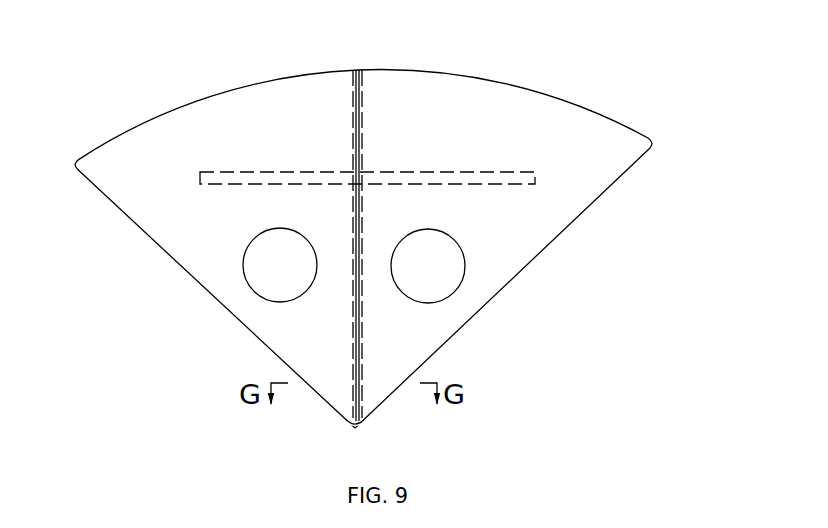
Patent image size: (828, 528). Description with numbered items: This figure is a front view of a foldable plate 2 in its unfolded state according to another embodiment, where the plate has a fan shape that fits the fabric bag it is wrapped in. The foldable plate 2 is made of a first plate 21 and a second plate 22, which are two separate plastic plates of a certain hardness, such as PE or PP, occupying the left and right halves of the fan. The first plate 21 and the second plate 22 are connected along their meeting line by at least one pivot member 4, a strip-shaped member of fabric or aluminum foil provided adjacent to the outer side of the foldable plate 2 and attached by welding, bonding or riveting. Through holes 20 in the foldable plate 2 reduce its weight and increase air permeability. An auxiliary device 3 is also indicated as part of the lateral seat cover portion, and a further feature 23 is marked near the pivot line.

The foldable plate 2 is at (354, 227).
The first plate 21 is at (178, 152).
The second plate 22 is at (488, 115).
The auxiliary device 3 is at (265, 178).
The pivot member 4 is at (350, 268).
The through holes 20 is at (428, 266).
The groove 23 is at (362, 333).